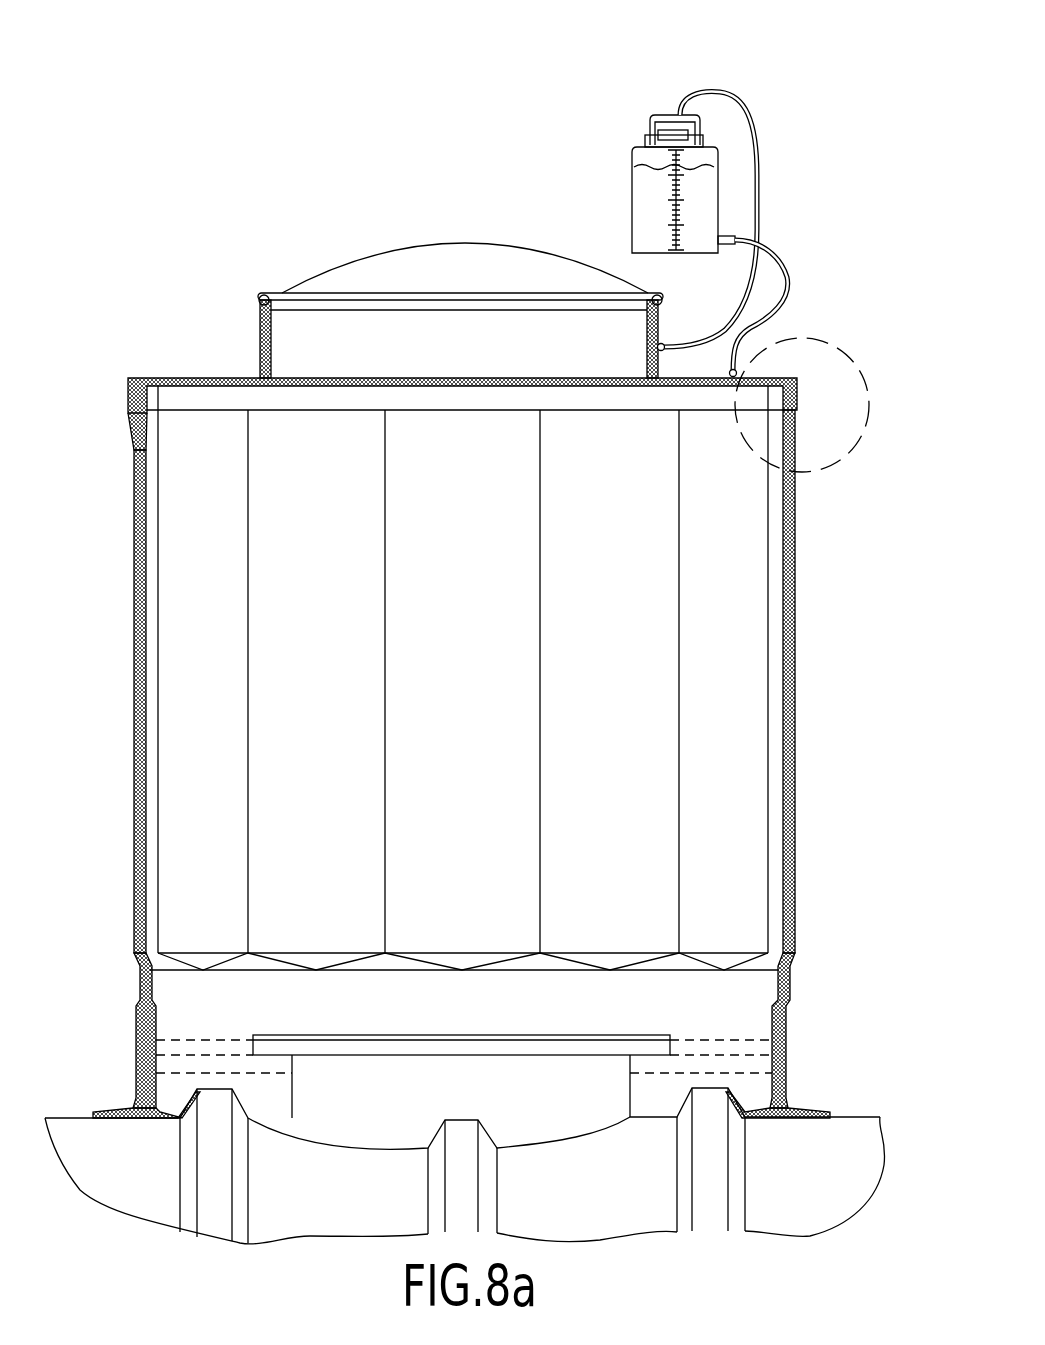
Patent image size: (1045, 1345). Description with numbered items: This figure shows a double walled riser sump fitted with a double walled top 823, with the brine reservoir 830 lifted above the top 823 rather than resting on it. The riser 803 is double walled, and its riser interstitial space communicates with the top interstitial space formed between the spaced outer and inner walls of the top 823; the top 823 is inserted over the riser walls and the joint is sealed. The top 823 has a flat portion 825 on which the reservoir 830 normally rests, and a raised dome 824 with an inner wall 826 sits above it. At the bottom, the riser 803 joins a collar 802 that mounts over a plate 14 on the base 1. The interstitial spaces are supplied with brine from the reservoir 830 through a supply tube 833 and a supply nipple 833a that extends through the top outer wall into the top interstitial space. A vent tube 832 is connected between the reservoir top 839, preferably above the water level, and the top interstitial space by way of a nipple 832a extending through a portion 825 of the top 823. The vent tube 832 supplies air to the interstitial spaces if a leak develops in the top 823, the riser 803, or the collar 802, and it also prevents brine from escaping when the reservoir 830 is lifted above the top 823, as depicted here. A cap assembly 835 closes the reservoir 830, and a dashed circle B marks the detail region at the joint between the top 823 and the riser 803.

The base 1 is at (607, 1198).
The plate 14 is at (375, 1114).
The collar 802 is at (786, 1100).
The riser 803 is at (792, 709).
The double walled top 823 is at (156, 370).
The dome 824 is at (360, 248).
The flat portion of the top 825 is at (228, 377).
The inner wall 826 is at (273, 352).
The reservoir 830 is at (645, 205).
The vent tube 832 is at (745, 108).
The nipple 832a is at (660, 355).
The supply tube 833 is at (765, 243).
The supply nipple 833a is at (720, 385).
The cap assembly 835 is at (643, 108).
The reservoir top 839 is at (663, 135).
The detail B is at (830, 345).